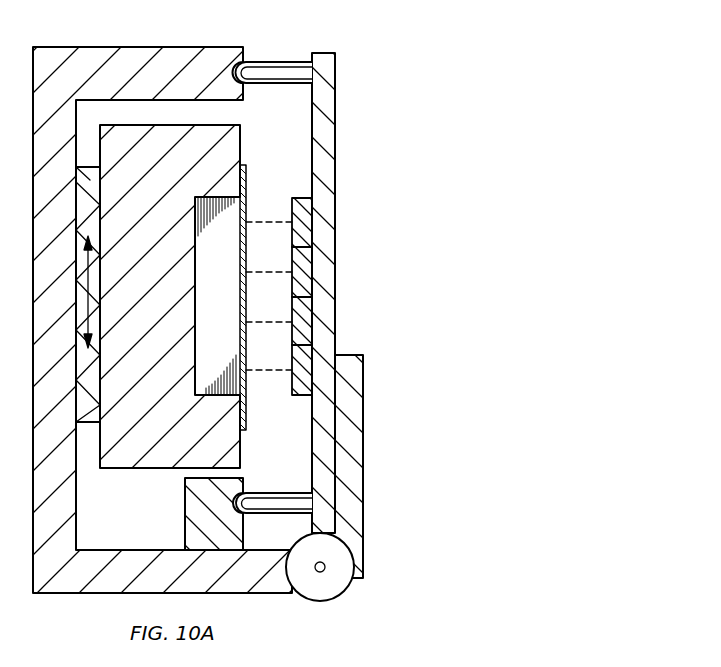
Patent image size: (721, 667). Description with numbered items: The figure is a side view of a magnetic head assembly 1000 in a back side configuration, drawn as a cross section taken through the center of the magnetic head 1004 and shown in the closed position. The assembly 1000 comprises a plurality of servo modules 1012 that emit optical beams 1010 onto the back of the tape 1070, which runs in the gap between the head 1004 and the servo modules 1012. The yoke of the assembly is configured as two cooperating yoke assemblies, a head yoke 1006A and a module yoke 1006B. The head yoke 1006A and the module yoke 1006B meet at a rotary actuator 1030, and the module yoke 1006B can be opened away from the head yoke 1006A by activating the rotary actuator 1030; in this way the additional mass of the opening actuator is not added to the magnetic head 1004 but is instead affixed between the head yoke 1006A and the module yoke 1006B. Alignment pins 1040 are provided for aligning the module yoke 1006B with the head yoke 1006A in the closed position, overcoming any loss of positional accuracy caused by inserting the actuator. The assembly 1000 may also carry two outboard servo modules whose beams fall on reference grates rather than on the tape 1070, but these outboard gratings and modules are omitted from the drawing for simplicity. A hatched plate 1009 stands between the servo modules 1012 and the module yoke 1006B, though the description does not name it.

The assembly 1000 is at (450, 255).
The head 1004 is at (123, 464).
The head yoke 1006A is at (80, 585).
The module yoke 1006B is at (358, 432).
The plate 1009 is at (328, 148).
The optical beams 1010 is at (267, 222).
The servo modules 1012 is at (305, 224).
The rotary actuator 1030 is at (338, 590).
The alignment pins 1040 is at (280, 68).
The tape 1070 is at (248, 172).